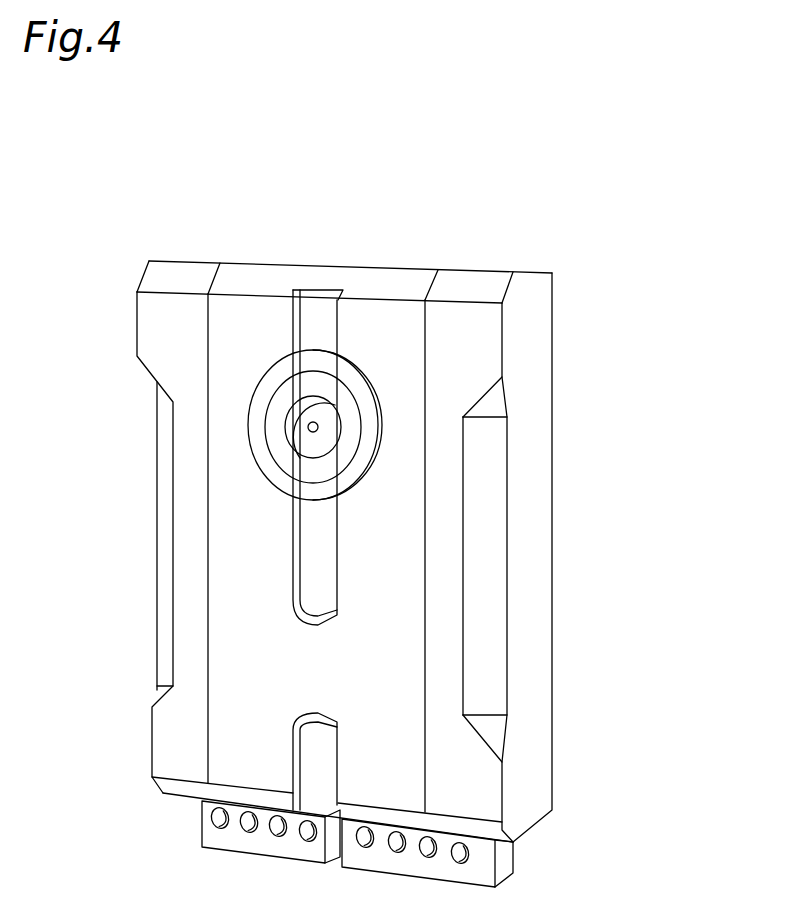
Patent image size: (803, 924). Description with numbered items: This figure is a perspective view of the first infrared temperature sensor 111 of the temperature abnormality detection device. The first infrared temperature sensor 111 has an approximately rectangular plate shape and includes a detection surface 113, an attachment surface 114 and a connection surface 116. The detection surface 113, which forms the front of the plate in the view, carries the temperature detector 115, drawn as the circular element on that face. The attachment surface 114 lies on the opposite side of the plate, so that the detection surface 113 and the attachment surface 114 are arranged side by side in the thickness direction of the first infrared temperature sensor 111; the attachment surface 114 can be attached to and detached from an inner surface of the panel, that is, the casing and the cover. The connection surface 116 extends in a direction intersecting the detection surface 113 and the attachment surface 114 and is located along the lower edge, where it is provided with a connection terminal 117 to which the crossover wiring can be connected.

The first infrared temperature sensor 111 is at (545, 197).
The detection surface 113 is at (413, 613).
The attachment surface 114 is at (552, 422).
The temperature detector 115 is at (307, 428).
The connection surface 116 is at (185, 797).
The connection terminal 117 is at (480, 863).